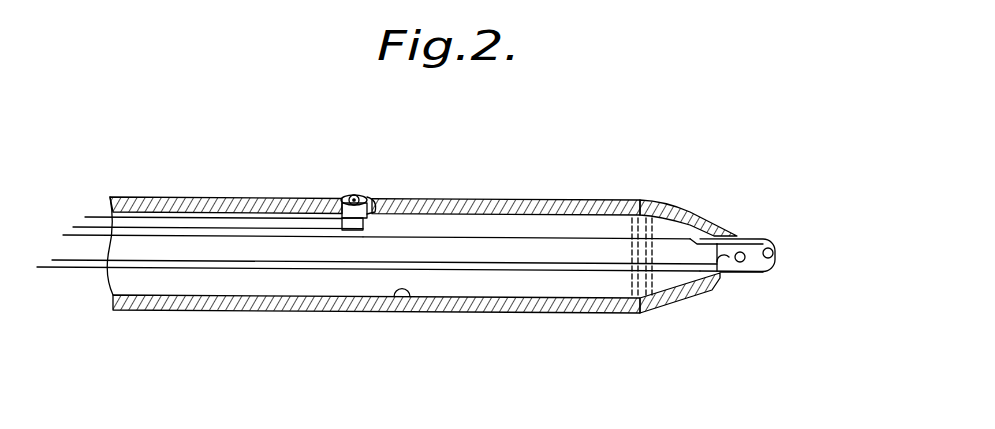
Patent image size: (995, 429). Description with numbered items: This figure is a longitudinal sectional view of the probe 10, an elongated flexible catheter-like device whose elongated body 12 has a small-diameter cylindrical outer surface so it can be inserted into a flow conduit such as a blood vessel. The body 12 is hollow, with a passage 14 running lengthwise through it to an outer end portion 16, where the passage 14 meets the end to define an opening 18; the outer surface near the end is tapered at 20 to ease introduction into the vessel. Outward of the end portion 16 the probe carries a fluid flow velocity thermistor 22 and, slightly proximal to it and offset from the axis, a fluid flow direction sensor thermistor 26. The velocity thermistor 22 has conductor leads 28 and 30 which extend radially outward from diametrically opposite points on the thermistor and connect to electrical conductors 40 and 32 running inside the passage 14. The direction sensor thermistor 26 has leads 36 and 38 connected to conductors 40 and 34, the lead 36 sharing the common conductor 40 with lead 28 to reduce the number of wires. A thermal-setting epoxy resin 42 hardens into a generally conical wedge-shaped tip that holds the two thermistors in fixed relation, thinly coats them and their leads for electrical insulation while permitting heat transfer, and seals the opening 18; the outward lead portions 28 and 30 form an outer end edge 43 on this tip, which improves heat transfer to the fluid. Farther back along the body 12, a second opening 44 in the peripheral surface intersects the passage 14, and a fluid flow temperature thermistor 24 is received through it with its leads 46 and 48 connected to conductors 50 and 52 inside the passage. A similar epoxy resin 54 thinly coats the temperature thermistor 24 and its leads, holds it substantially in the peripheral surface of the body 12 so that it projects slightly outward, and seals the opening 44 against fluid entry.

The probe 10 is at (565, 194).
The elongated body 12 is at (243, 312).
The passage 14 is at (391, 298).
The outer end portion 16 is at (716, 282).
The opening 18 is at (722, 236).
The tapered surface 20 is at (680, 210).
The fluid flow velocity thermistor 22 is at (777, 250).
The fluid flow temperature thermistor 24 is at (362, 198).
The fluid flow direction sensor thermistor 26 is at (744, 268).
The conductor lead 28 is at (733, 238).
The conductor lead 30 is at (748, 277).
The electrical conductor 32 is at (49, 272).
The electrical conductor 34 is at (62, 260).
The conductor lead 36 is at (723, 243).
The conductor lead 38 is at (728, 268).
The common conductor 40 is at (63, 233).
The epoxy resin tip 42 is at (725, 264).
The outer end edge 43 is at (773, 270).
The second opening 44 is at (373, 203).
The lead 46 is at (367, 224).
The lead 48 is at (342, 207).
The electrical conductor 50 is at (72, 227).
The electrical conductor 52 is at (100, 210).
The epoxy resin 54 is at (345, 200).